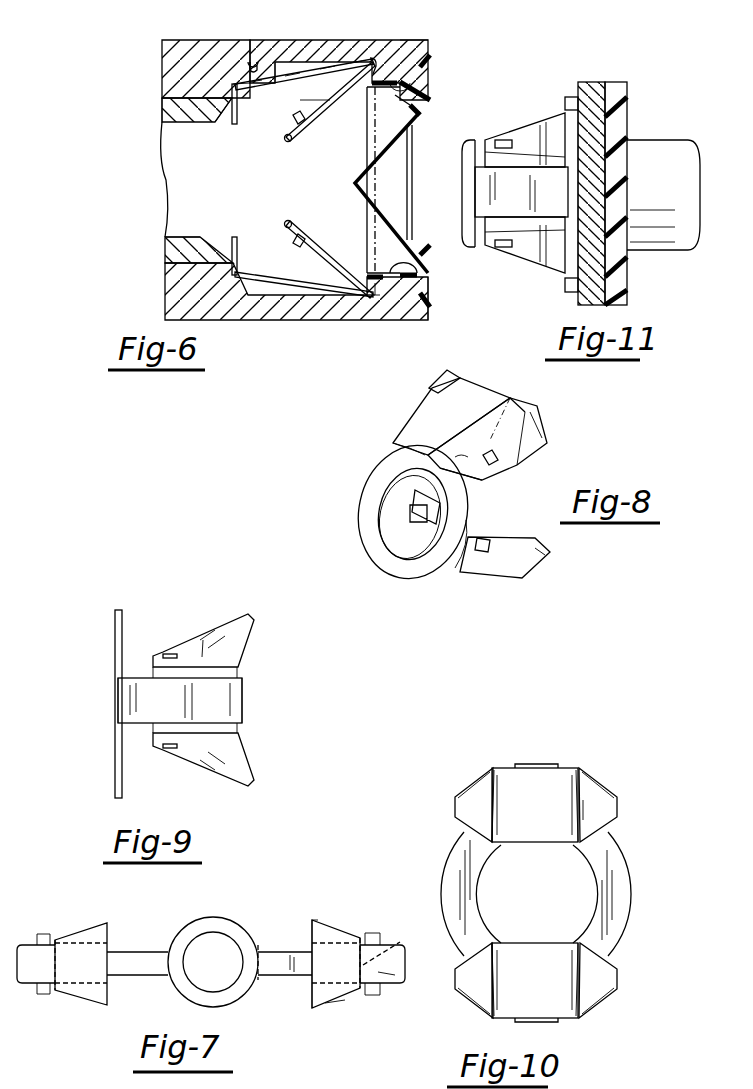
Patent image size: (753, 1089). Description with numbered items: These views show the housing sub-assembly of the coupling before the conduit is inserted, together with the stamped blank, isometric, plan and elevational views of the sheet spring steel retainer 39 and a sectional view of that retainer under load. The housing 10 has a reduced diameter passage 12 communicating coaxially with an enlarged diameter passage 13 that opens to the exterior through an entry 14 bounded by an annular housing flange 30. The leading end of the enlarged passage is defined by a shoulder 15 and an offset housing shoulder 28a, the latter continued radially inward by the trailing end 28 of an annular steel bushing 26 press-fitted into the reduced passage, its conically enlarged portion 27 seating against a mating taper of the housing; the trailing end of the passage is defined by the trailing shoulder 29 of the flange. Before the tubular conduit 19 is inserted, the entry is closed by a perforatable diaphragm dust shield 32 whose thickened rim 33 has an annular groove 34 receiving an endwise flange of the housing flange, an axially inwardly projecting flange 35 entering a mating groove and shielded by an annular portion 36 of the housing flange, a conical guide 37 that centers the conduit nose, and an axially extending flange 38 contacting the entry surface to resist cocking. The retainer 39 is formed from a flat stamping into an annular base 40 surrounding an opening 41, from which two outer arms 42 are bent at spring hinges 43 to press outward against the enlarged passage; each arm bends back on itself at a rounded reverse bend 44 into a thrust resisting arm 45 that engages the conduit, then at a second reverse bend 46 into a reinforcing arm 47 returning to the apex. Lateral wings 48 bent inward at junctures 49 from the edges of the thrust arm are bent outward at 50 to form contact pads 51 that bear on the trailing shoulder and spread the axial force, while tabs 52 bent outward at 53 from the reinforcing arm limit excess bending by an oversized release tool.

In FIG. 6, the housing 10 is at (169, 31).
In FIG. 6, the reduced diameter passage 12 is at (185, 238).
In FIG. 6, the enlarged diameter passage 13 is at (300, 63).
In FIG. 6, the entry 14 is at (413, 60).
In FIG. 6, the shoulder 15 is at (255, 60).
In FIG. 11, the tubular conduit 19 is at (668, 177).
In FIG. 6, the annular steel bushing 26 is at (187, 117).
In FIG. 6, the conically enlarged portion 27 is at (220, 113).
In FIG. 6, the trailing end 28 is at (240, 270).
In FIG. 6, the housing shoulder 28a is at (237, 83).
In FIG. 6, the trailing shoulder 29 is at (363, 300).
In FIG. 11, the trailing shoulder 29 is at (577, 100).
In FIG. 11, the housing flange 30 is at (597, 92).
In FIG. 6, the perforatable diaphragm dust shield 32 is at (382, 147).
In FIG. 6, the thickened rim 33 is at (433, 72).
In FIG. 6, the annular groove 34 is at (370, 290).
In FIG. 6, the axially inwardly projecting flange 35 is at (390, 320).
In FIG. 11, the axially inwardly projecting flange 35 is at (620, 120).
In FIG. 6, the annular portion 36 is at (427, 50).
In FIG. 6, the conical guide 37 is at (425, 107).
In FIG. 6, the axially extending flange 38 is at (413, 260).
In FIG. 11, the axially extending flange 38 is at (565, 104).
In FIG. 11, the spring steel retainer 39 is at (520, 184).
In FIG. 8, the spring steel retainer 39 is at (452, 476).
In FIG. 9, the spring steel retainer 39 is at (183, 701).
In FIG. 7, the spring steel retainer 39 is at (225, 958).
In FIG. 10, the spring steel retainer 39 is at (548, 866).
In FIG. 6, the annular base 40 is at (235, 125).
In FIG. 11, the annular base 40 is at (468, 193).
In FIG. 8, the annular base 40 is at (367, 510).
In FIG. 9, the annular base 40 is at (113, 632).
In FIG. 7, the annular base 40 is at (182, 933).
In FIG. 10, the annular base 40 is at (607, 877).
In FIG. 8, the opening 41 is at (400, 533).
In FIG. 7, the opening 41 is at (185, 956).
In FIG. 10, the opening 41 is at (483, 867).
In FIG. 6, the outer arms 42 is at (275, 80).
In FIG. 11, the outer arms 42 is at (533, 198).
In FIG. 8, the outer arms 42 is at (470, 419).
In FIG. 9, the outer arms 42 is at (228, 712).
In FIG. 7, the outer arms 42 is at (268, 967).
In FIG. 6, the bend 43 is at (247, 277).
In FIG. 8, the bend 43 is at (387, 452).
In FIG. 9, the bend 43 is at (118, 697).
In FIG. 7, the bend 43 is at (256, 947).
In FIG. 6, the reverse bend 44 is at (372, 60).
In FIG. 8, the reverse bend 44 is at (508, 397).
In FIG. 9, the reverse bend 44 is at (243, 705).
In FIG. 7, the reverse bend 44 is at (303, 953).
In FIG. 10, the reverse bend 44 is at (533, 762).
In FIG. 6, the thrust resisting arm 45 is at (348, 107).
In FIG. 8, the thrust resisting arm 45 is at (487, 439).
In FIG. 7, the thrust resisting arm 45 is at (350, 972).
In FIG. 10, the thrust resisting arm 45 is at (545, 818).
In FIG. 6, the second reverse bend 46 is at (290, 138).
In FIG. 8, the second reverse bend 46 is at (465, 475).
In FIG. 7, the second reverse bend 46 is at (403, 943).
In FIG. 6, the reinforcing arm 47 is at (327, 100).
In FIG. 8, the reinforcing arm 47 is at (466, 445).
In FIG. 9, the reinforcing arm 47 is at (153, 660).
In FIG. 7, the reinforcing arm 47 is at (378, 972).
In FIG. 11, the lateral wings 48 is at (520, 247).
In FIG. 8, the lateral wings 48 is at (515, 462).
In FIG. 9, the lateral wings 48 is at (238, 770).
In FIG. 7, the lateral wings 48 is at (325, 1003).
In FIG. 10, the lateral wings 48 is at (468, 812).
In FIG. 9, the junctures 49 is at (202, 657).
In FIG. 7, the junctures 49 is at (335, 942).
In FIG. 10, the junctures 49 is at (585, 810).
In FIG. 8, the bend 50 is at (548, 430).
In FIG. 7, the bend 50 is at (318, 920).
In FIG. 11, the contact pads 51 is at (563, 243).
In FIG. 8, the contact pads 51 is at (533, 420).
In FIG. 9, the contact pads 51 is at (252, 640).
In FIG. 7, the contact pads 51 is at (312, 997).
In FIG. 10, the contact pads 51 is at (602, 780).
In FIG. 6, the tabs 52 is at (293, 117).
In FIG. 11, the tabs 52 is at (503, 193).
In FIG. 8, the tabs 52 is at (488, 464).
In FIG. 9, the tabs 52 is at (163, 750).
In FIG. 7, the tabs 52 is at (366, 936).
In FIG. 7, the bend 53 is at (380, 943).